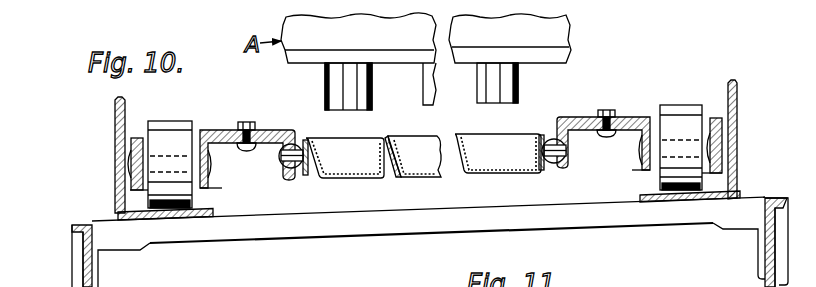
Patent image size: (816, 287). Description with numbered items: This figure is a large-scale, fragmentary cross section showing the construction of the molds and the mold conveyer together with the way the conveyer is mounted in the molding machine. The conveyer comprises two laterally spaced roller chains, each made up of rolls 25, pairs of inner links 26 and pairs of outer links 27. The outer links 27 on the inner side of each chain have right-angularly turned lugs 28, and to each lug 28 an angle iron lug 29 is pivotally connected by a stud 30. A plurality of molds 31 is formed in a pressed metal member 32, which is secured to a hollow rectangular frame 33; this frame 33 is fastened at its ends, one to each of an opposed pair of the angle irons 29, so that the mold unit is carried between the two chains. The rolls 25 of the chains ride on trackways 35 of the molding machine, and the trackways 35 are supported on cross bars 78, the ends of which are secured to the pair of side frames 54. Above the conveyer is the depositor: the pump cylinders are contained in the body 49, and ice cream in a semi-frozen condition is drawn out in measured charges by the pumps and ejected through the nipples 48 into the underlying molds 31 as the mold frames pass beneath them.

The side frames 54 is at (76, 284).
The cross bars 78 is at (327, 224).
The trackways 35 is at (170, 219).
The inner links 26 is at (141, 138).
The rolls 25 is at (169, 127).
The outer links 27 is at (130, 191).
The angle iron lug 29 is at (290, 129).
The lugs 28 is at (232, 143).
The stud 30 is at (245, 122).
The hollow rectangular frame 33 is at (292, 181).
The pressed metal member 32 is at (486, 176).
The molds 31 is at (442, 155).
The body 49 is at (426, 38).
The nipples 48 is at (423, 86).